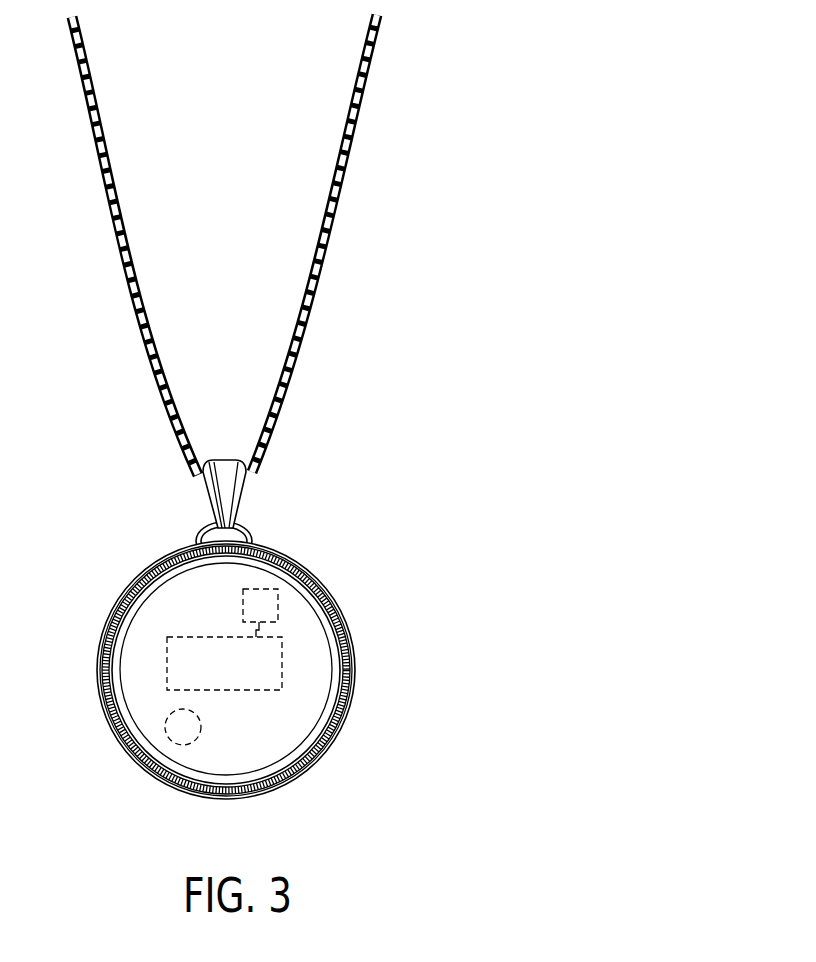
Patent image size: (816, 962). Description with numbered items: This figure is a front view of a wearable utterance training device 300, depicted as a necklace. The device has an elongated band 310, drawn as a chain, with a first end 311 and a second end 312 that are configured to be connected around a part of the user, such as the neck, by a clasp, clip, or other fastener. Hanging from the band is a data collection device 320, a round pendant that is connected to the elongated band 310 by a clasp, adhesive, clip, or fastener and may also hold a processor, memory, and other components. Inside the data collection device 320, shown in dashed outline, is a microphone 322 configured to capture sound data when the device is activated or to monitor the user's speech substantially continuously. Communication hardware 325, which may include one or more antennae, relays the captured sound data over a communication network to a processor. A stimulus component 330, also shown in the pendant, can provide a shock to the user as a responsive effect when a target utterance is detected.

The wearable utterance training device 300 is at (290, 428).
The elongated band 310 is at (225, 245).
The first end 311 is at (327, 243).
The second end 312 is at (124, 258).
The data collection device 320 is at (120, 590).
The microphone 322 is at (279, 606).
The communication hardware 325 is at (283, 663).
The stimulus component 330 is at (193, 741).